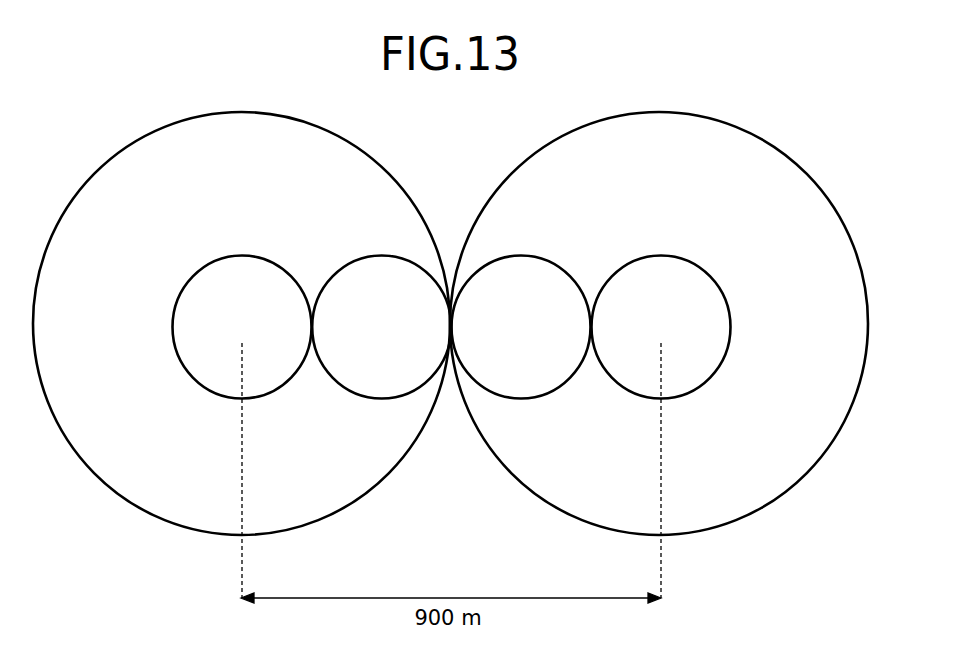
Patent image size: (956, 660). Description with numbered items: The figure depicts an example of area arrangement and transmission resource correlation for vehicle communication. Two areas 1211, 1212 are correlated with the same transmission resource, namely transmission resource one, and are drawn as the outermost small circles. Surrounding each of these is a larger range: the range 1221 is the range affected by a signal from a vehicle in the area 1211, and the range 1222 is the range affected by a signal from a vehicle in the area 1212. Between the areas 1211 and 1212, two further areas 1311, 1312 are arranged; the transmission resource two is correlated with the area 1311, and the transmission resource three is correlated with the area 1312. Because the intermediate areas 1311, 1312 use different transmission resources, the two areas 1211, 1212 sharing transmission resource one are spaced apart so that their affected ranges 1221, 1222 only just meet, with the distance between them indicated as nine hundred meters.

The range 1221 is at (331, 104).
The range 1222 is at (745, 108).
The area 1211 is at (243, 255).
The area 1311 is at (382, 399).
The area 1312 is at (520, 255).
The area 1212 is at (663, 255).